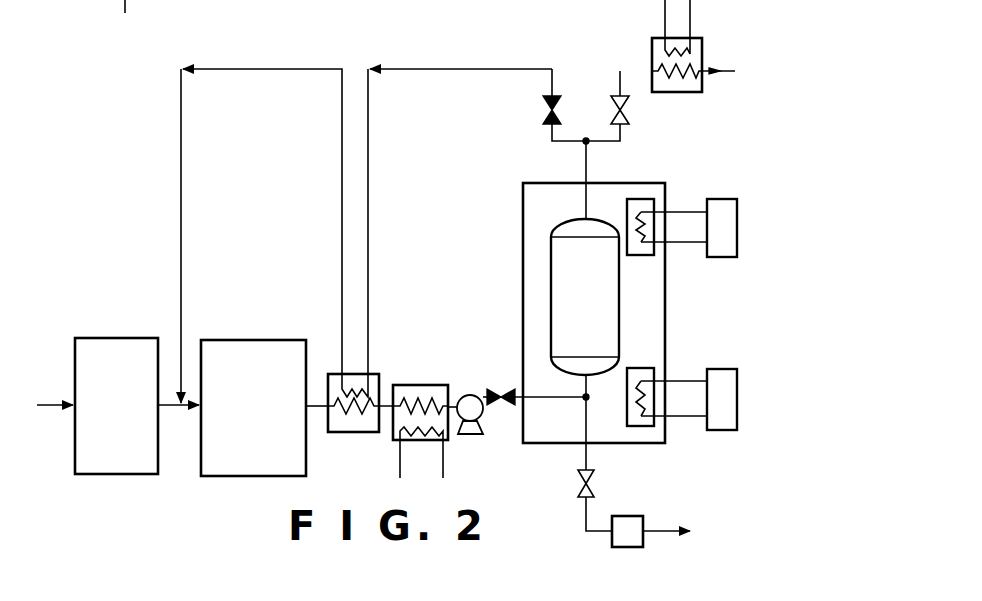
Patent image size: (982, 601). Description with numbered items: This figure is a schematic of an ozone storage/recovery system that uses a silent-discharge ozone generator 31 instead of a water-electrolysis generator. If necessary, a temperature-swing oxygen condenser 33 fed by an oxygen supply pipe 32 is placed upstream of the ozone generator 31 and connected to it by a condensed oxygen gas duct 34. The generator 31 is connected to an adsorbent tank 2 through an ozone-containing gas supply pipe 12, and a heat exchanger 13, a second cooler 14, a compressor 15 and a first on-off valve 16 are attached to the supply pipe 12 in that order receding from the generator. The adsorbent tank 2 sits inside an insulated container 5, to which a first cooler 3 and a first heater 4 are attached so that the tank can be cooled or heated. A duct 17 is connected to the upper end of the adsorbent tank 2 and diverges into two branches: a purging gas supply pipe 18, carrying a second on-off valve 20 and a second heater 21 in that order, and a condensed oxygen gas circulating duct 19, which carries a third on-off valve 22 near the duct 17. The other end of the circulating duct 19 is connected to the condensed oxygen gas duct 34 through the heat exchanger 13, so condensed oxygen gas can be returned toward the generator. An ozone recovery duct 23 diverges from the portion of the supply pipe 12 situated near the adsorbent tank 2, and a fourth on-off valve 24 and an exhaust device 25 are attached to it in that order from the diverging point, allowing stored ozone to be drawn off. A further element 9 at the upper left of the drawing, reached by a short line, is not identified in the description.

The adsorbent tank 2 is at (612, 300).
The first cooler 3 is at (640, 366).
The first heater 4 is at (668, 188).
The insulated container 5 is at (641, 190).
The line 9 is at (112, 2).
The ozone-containing gas supply pipe 12 is at (312, 402).
The heat exchanger 13 is at (377, 372).
The second cooler 14 is at (425, 385).
The compressor 15 is at (472, 436).
The first on-off valve 16 is at (494, 392).
The duct 17 is at (583, 152).
The purging gas supply pipe 18 is at (720, 76).
The condensed oxygen gas circulating duct 19 is at (512, 69).
The second on-off valve 20 is at (628, 110).
The second heater 21 is at (656, 36).
The third on-off valve 22 is at (558, 108).
The ozone recovery duct 23 is at (582, 452).
The fourth on-off valve 24 is at (594, 490).
The exhaust device 25 is at (645, 517).
The silent-discharge ozone generator 31 is at (278, 340).
The oxygen supply pipe 32 is at (50, 400).
The temperature-swing oxygen condenser 33 is at (125, 338).
The condensed oxygen gas duct 34 is at (171, 408).